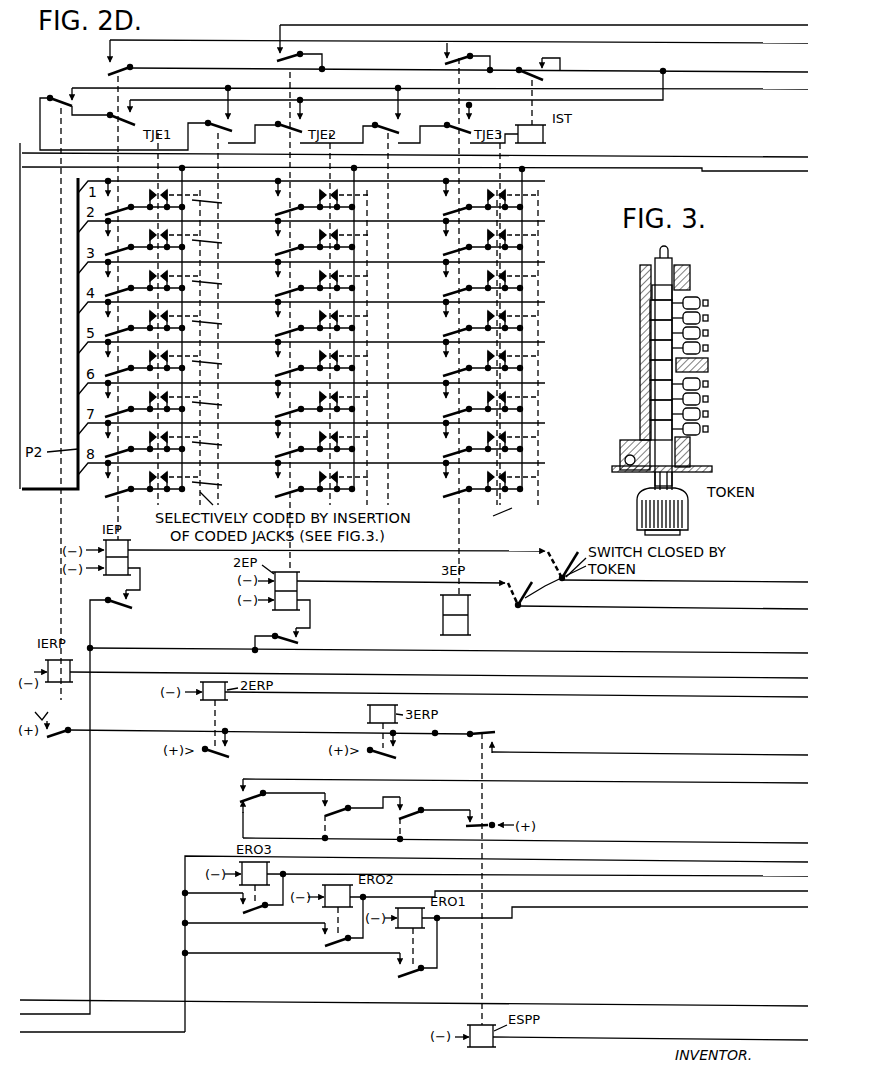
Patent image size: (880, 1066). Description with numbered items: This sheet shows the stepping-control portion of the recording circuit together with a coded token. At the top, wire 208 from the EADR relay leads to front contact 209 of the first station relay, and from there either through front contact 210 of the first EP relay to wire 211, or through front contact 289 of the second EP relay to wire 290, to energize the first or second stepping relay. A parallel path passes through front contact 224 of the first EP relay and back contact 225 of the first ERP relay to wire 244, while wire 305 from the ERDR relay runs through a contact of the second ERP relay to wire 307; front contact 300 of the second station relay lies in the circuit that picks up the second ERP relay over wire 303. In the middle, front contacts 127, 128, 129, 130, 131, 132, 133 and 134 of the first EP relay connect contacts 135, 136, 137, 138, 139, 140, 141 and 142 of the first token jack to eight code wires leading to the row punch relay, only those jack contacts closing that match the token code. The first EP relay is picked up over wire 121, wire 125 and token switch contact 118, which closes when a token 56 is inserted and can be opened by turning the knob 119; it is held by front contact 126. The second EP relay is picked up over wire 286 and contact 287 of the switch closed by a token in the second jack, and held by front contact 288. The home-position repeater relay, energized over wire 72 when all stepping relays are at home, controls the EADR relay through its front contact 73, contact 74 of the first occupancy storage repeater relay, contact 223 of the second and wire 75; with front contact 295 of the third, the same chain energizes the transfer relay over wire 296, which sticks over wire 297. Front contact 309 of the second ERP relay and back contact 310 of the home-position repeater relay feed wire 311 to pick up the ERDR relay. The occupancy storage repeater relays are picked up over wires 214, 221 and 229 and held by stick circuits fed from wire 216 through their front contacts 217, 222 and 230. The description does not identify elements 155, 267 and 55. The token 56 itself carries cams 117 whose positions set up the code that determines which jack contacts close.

In FIG. 2D, the wire 290 is at (790, 30).
In FIG. 2D, the wire 211 is at (803, 46).
In FIG. 2D, the wire 208 is at (803, 73).
In FIG. 2D, the wire 305 is at (803, 92).
In FIG. 2D, the wire 244 is at (790, 156).
In FIG. 2D, the wire 307 is at (803, 176).
In FIG. 2D, the front contact of relay 1EP 210 is at (119, 71).
In FIG. 2D, the front contact of relay 2EP 289 is at (275, 60).
In FIG. 2D, the front contact of relay 1ST 209 is at (530, 70).
In FIG. 2D, the back contact of relay 1ERP 225 is at (60, 95).
In FIG. 2D, the front contact of relay 1EP 224 is at (117, 121).
In FIG. 2D, the front contact of relay 2ST 300 is at (214, 118).
In FIG. 2D, the conductor 155 is at (36, 316).
In FIG. 2D, the front contact of relay 1EP 127 is at (153, 196).
In FIG. 2D, the front contact of relay 1EP 128 is at (153, 236).
In FIG. 2D, the front contact of relay 1EP 129 is at (153, 277).
In FIG. 2D, the front contact of relay 1EP 130 is at (153, 317).
In FIG. 2D, the front contact of relay 1EP 131 is at (153, 357).
In FIG. 2D, the front contact of relay 1EP 132 is at (153, 398).
In FIG. 2D, the front contact of relay 1EP 133 is at (153, 438).
In FIG. 2D, the front contact of relay 1EP 134 is at (153, 478).
In FIG. 2D, the token jack contact 135 is at (222, 208).
In FIG. 2D, the token jack contact 136 is at (222, 248).
In FIG. 2D, the token jack contact 137 is at (222, 289).
In FIG. 2D, the token jack contact 138 is at (222, 329).
In FIG. 2D, the token jack contact 139 is at (222, 369).
In FIG. 2D, the token jack contact 140 is at (222, 410).
In FIG. 2D, the token jack contact 141 is at (222, 450).
In FIG. 2D, the token jack contact 142 is at (222, 490).
In FIG. 2D, the front contact of relay 1EP 126 is at (131, 611).
In FIG. 2D, the front contact of relay 2EP 288 is at (300, 640).
In FIG. 2D, the token switch contact 118 is at (572, 562).
In FIG. 2D, the token switch contact 287 is at (514, 584).
In FIG. 2D, the wire 125 is at (760, 582).
In FIG. 2D, the wire 286 is at (728, 609).
In FIG. 2D, the wire 121 is at (757, 654).
In FIG. 2D, the wire 303 is at (800, 698).
In FIG. 2D, the back contact of relay ESPP 310 is at (490, 733).
In FIG. 2D, the wire 311 is at (745, 756).
In FIG. 2D, the wire 296 is at (740, 784).
In FIG. 2D, the front contact of relay 2ERP 309 is at (225, 778).
In FIG. 2D, the front contact of relay ERO3 295 is at (258, 796).
In FIG. 2D, the contact of relay ERO2 223 is at (342, 812).
In FIG. 2D, the contact of relay ERO1 74 is at (414, 810).
In FIG. 2D, the front contact of relay ESPP 73 is at (484, 822).
In FIG. 2D, the wire 75 is at (742, 845).
In FIG. 2D, the wire 297 is at (713, 864).
In FIG. 2D, the front contact of relay ERO3 217 is at (240, 908).
In FIG. 2D, the front contact of relay ERO2 230 is at (322, 945).
In FIG. 2D, the front contact of relay ERO1 222 is at (415, 972).
In FIG. 2D, the wire 229 is at (685, 893).
In FIG. 2D, the wire 221 is at (730, 907).
In FIG. 2D, the wire 214 is at (793, 878).
In FIG. 2D, the conductor 267 is at (25, 999).
In FIG. 2D, the wire 216 is at (76, 1033).
In FIG. 2D, the wire 72 is at (755, 1040).
In FIG. 3, the cams 117 is at (657, 417).
In FIG. 3, the mounting plate 55 is at (700, 467).
In FIG. 3, the token 56 is at (652, 476).
In FIG. 3, the knob 119 is at (689, 503).